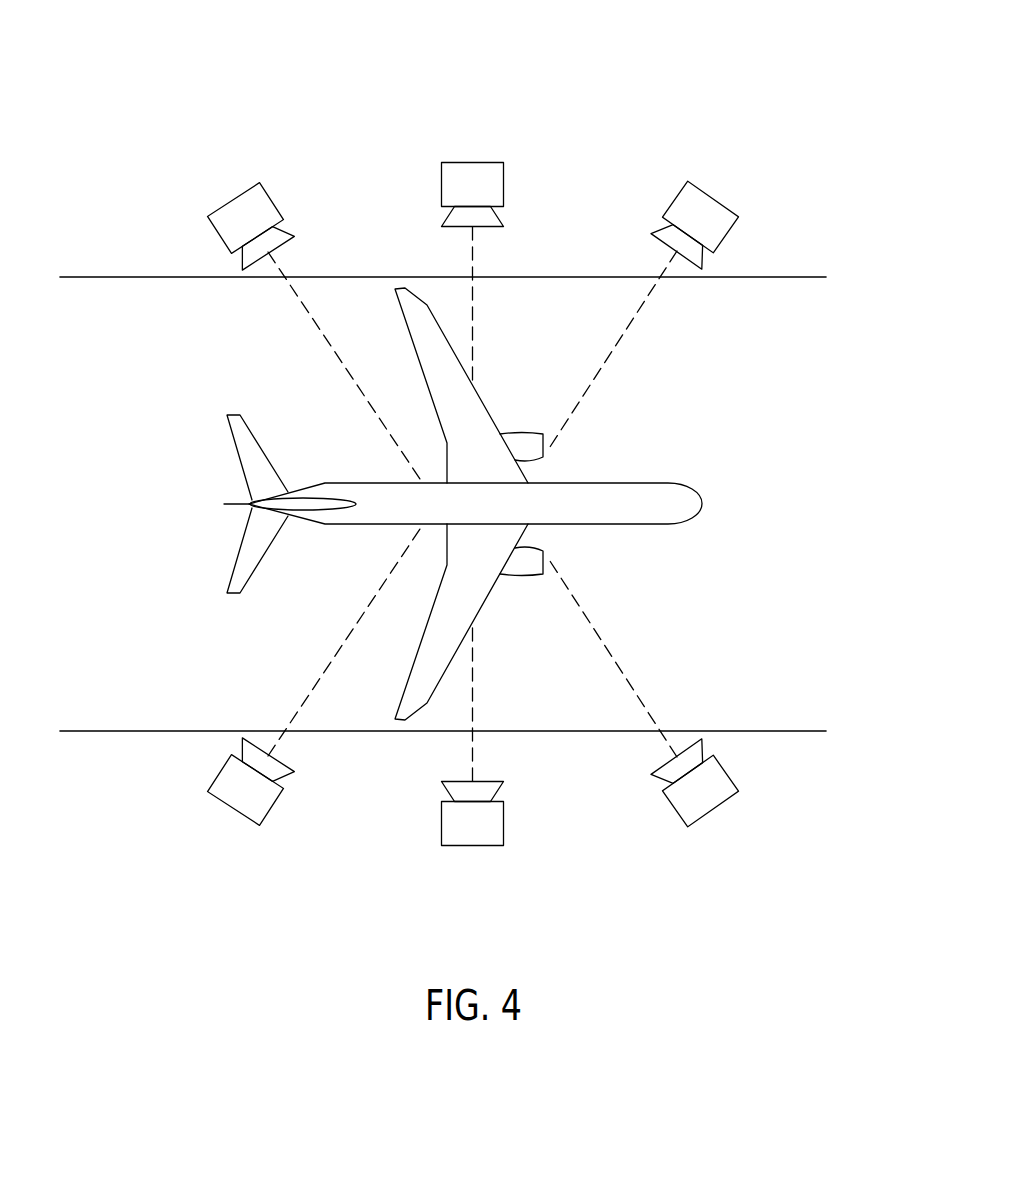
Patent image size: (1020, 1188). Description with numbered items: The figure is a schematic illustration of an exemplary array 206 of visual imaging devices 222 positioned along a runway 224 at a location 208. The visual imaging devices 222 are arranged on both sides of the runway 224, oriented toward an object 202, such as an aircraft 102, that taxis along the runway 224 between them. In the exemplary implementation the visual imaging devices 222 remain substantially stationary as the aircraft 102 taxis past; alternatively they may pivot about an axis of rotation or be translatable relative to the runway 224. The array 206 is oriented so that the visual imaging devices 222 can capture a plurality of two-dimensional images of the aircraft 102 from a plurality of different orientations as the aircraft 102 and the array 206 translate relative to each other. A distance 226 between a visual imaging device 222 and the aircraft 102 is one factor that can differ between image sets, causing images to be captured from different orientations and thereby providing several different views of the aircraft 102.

The location 208 is at (113, 76).
The array 206 is at (205, 190).
The visual imaging device 222 is at (453, 179).
The runway 224 is at (241, 358).
The distance 226 is at (630, 325).
The object 202 is at (670, 431).
The aircraft 102 is at (372, 483).